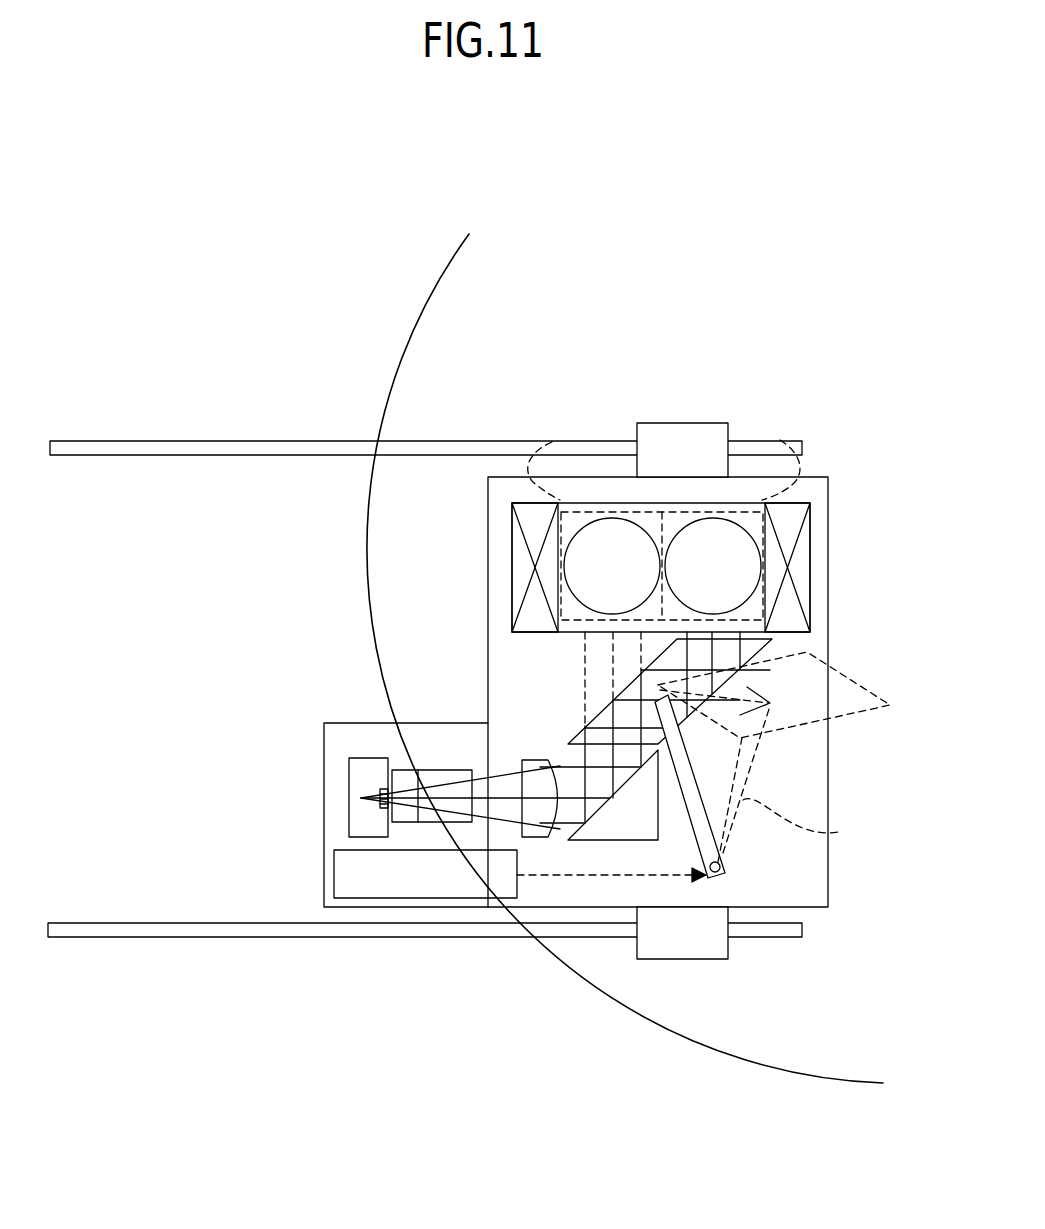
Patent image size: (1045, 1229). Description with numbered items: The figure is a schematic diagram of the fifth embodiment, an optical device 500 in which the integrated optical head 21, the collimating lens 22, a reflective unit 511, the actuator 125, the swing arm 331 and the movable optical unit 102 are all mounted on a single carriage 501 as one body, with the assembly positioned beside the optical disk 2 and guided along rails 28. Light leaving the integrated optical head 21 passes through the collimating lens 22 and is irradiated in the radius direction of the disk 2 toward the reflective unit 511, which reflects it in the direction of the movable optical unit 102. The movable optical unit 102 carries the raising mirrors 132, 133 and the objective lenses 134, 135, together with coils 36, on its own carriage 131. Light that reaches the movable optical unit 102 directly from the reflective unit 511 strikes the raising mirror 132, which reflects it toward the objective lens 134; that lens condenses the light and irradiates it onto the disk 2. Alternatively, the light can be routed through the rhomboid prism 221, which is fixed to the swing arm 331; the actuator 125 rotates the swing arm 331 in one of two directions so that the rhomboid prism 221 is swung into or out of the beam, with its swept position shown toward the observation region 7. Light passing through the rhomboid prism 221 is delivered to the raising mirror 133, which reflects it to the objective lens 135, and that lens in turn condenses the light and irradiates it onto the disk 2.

The disk 2 is at (372, 558).
The observation target 7 is at (830, 652).
The integrated optical head 21 is at (392, 768).
The collimating lens 22 is at (545, 775).
The guide rail 28 is at (170, 456).
The coil 36 is at (798, 573).
The movable optical unit 102 is at (815, 477).
The actuator 125 is at (370, 898).
The carriage 131 is at (812, 538).
The raising mirror 132 is at (550, 440).
The raising mirror 133 is at (780, 441).
The objective lens 134 is at (580, 533).
The objective lens 135 is at (720, 520).
The rhomboid prism 221 is at (568, 742).
The swing arm 331 is at (700, 787).
The optical device 500 is at (486, 905).
The carriage 501 is at (730, 960).
The reflective unit 511 is at (600, 841).